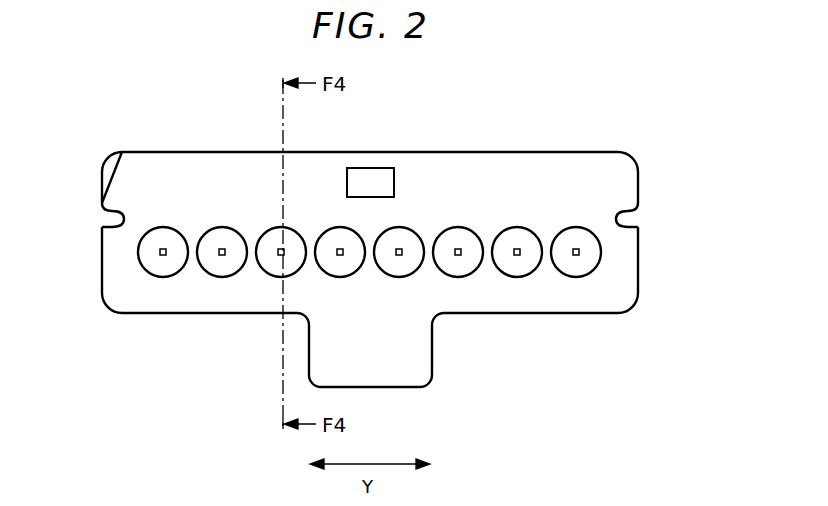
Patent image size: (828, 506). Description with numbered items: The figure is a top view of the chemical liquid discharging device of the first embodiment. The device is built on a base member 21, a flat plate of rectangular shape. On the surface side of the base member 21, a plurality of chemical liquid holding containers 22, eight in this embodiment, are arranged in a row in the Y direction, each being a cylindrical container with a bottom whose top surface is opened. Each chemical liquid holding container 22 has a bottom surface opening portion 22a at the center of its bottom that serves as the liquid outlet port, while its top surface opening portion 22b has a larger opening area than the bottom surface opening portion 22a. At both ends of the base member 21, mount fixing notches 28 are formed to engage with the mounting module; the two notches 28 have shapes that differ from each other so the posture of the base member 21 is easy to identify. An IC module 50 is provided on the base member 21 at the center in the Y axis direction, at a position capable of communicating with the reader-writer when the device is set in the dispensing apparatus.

The base member 21 is at (537, 300).
The chemical liquid holding container 22 is at (271, 273).
The bottom surface opening portion 22a is at (160, 254).
The top surface opening portion 22b is at (596, 261).
The mount fixing notch 28 is at (114, 218).
The IC module 50 is at (378, 168).